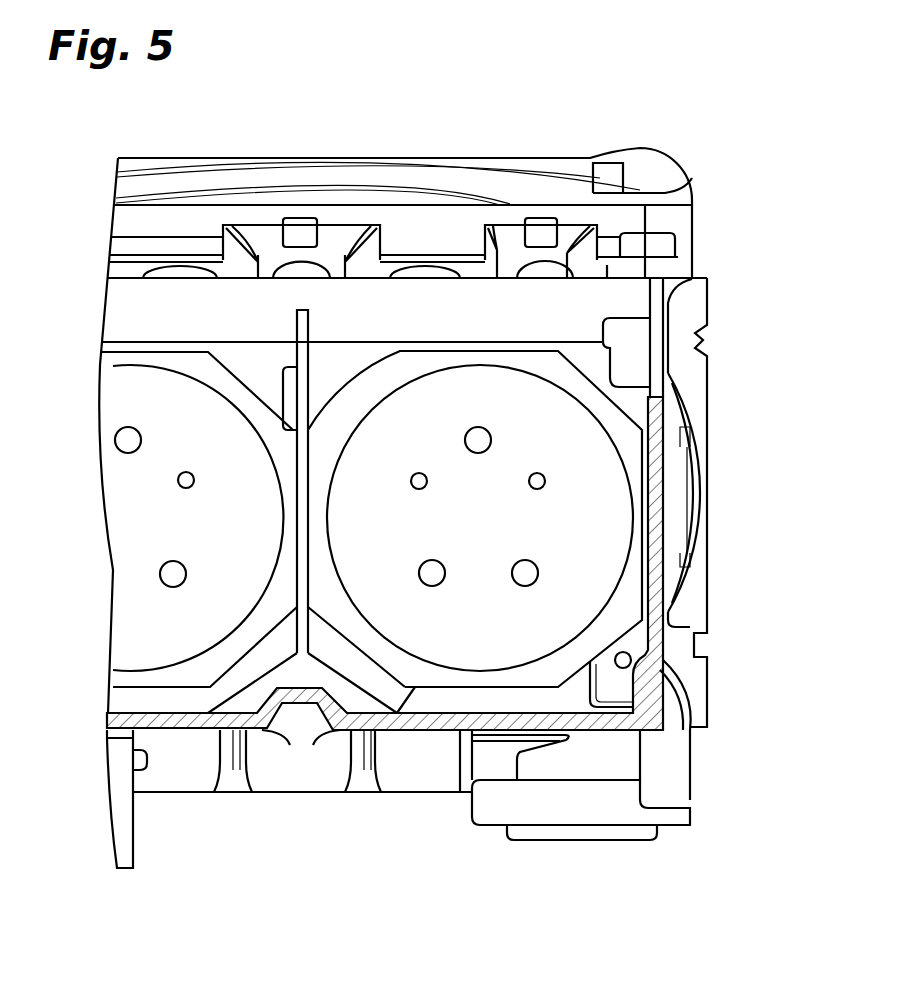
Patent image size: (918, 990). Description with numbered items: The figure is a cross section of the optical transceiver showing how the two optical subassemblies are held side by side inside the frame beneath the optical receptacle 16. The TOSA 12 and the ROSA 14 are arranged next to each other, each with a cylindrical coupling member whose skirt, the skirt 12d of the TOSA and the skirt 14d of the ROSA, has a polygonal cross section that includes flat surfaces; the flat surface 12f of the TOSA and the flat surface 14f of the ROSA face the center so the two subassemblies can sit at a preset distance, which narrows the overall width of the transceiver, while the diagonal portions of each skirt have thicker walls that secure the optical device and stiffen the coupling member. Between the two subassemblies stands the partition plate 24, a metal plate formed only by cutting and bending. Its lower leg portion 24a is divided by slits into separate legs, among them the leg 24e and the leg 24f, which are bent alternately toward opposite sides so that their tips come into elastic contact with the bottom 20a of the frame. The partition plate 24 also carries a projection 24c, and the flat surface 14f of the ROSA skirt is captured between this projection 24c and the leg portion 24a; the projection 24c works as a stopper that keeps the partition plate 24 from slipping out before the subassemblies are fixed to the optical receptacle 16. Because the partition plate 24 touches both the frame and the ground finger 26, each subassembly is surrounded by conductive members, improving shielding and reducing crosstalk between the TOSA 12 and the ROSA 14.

The ground finger 26 is at (343, 233).
The optical receptacle 16 is at (623, 295).
The projection 24c is at (287, 383).
The skirt 14d is at (113, 362).
The partition plate 24 is at (300, 457).
The ROSA 14 is at (152, 518).
The skirt 12d is at (612, 418).
The TOSA 12 is at (600, 510).
The bottom 20a is at (155, 703).
The flat surface 14f is at (297, 575).
The leg 24f is at (263, 677).
The leg 24e is at (355, 683).
The flat surface 12f is at (313, 575).
The leg portion 24a is at (383, 869).